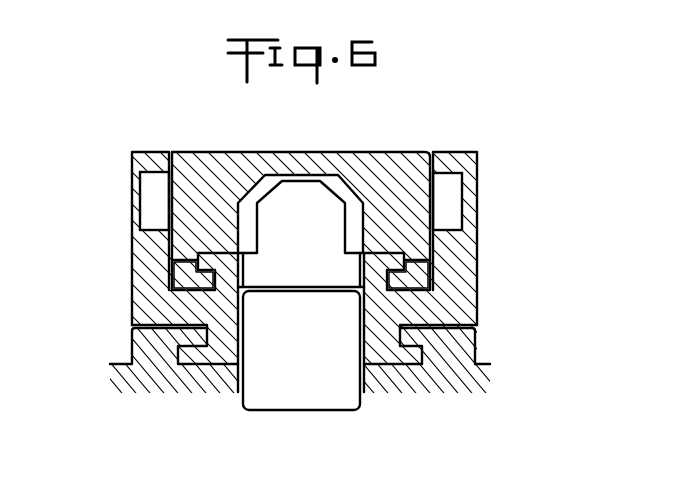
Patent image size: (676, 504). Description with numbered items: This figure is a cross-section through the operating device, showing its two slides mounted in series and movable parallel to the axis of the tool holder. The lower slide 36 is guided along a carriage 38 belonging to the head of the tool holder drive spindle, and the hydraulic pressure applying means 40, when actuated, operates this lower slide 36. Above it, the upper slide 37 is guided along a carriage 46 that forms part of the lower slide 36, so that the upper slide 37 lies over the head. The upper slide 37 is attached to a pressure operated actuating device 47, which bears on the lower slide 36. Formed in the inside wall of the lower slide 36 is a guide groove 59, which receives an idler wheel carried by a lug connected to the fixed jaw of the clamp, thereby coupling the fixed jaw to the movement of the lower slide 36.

The lower slide 36 is at (457, 297).
The upper slide 37 is at (372, 170).
The carriage 38 is at (157, 343).
The hydraulic pressure applying means 40 is at (301, 350).
The carriage 46 is at (213, 264).
The pressure operated actuating device 47 is at (301, 217).
The guide groove 59 is at (148, 197).